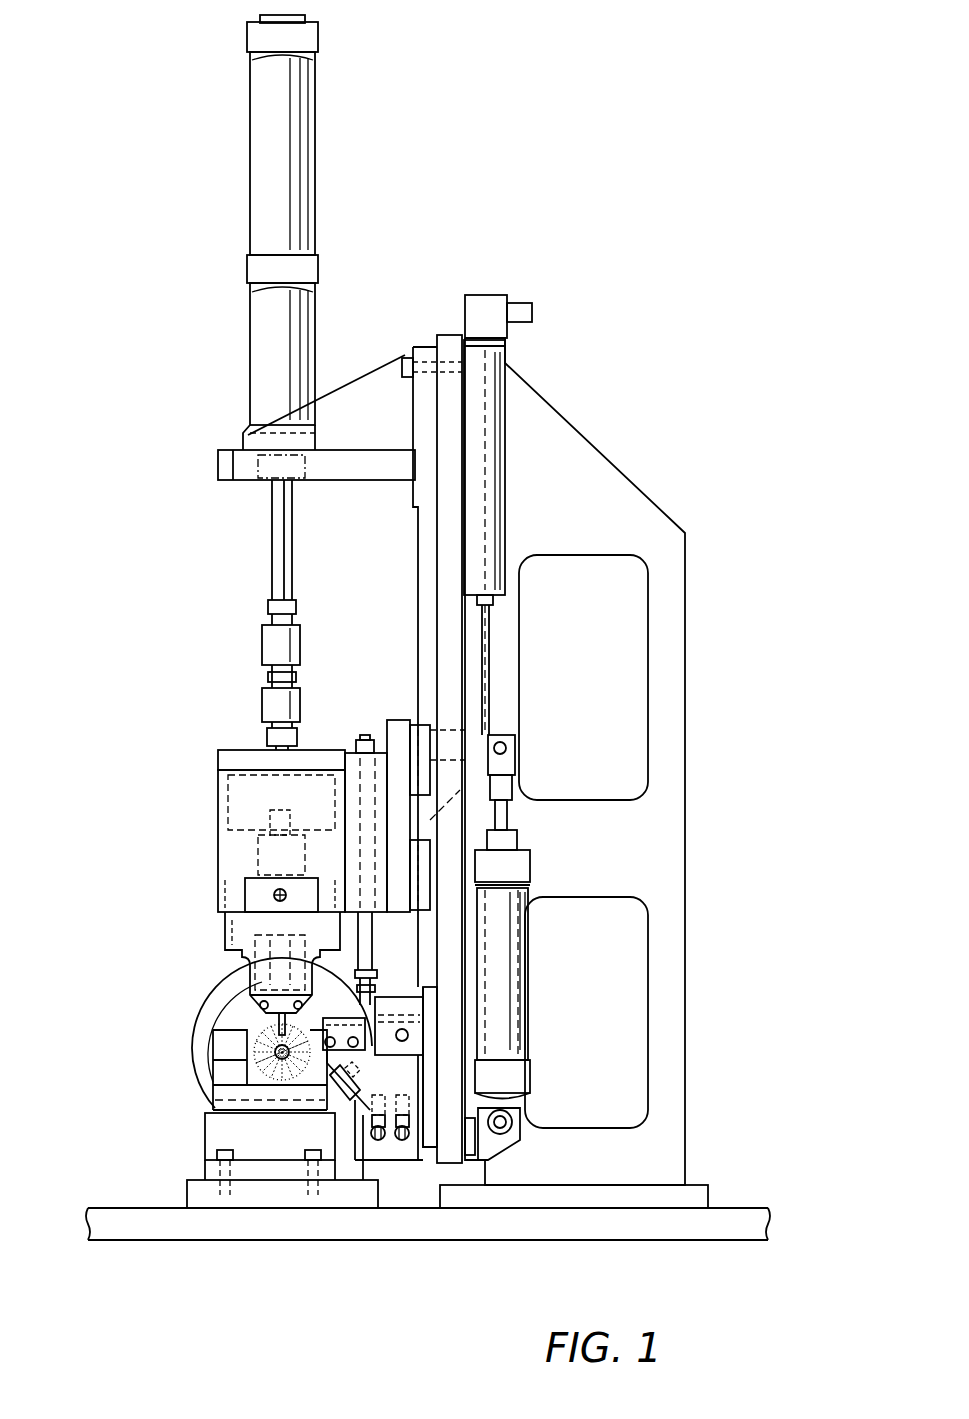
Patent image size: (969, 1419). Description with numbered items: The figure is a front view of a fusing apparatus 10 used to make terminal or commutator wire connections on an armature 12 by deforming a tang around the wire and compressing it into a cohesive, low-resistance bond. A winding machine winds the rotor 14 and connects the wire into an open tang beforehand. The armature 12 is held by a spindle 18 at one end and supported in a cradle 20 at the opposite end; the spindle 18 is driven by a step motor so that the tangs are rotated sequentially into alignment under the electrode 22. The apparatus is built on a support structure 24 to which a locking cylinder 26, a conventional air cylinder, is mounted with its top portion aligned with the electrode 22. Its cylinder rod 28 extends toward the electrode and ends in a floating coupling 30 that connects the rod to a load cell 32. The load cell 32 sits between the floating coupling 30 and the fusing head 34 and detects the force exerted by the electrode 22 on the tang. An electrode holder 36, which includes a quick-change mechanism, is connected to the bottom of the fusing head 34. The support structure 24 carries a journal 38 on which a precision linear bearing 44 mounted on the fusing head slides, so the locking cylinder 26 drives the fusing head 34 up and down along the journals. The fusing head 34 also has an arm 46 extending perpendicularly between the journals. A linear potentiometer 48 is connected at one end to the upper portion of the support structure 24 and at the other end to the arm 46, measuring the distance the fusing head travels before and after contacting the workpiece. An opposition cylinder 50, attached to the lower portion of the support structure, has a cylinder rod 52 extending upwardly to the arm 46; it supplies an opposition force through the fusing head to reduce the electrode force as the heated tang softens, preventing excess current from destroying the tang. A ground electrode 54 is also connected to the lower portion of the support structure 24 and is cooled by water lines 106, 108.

The fusing apparatus 10 is at (645, 285).
The armature 12 is at (248, 1047).
The rotor 14 is at (256, 1028).
The spindle 18 is at (200, 1020).
The cradle 20 is at (250, 1076).
The electrode 22 is at (262, 1012).
The support structure 24 is at (570, 470).
The locking cylinder 26 is at (300, 130).
The cylinder rod 28 is at (272, 530).
The floating coupling 30 is at (296, 656).
The load cell 32 is at (297, 713).
The fusing head 34 is at (232, 762).
The electrode holder 36 is at (227, 925).
The journal 38 is at (425, 607).
The precision linear bearing 44 is at (418, 745).
The arm 46 is at (470, 740).
The linear potentiometer 48 is at (492, 305).
The opposition cylinder 50 is at (508, 1013).
The cylinder rod 52 is at (503, 815).
The ground electrode 54 is at (395, 1152).
The water line 106 is at (405, 1145).
The water line 108 is at (370, 1145).